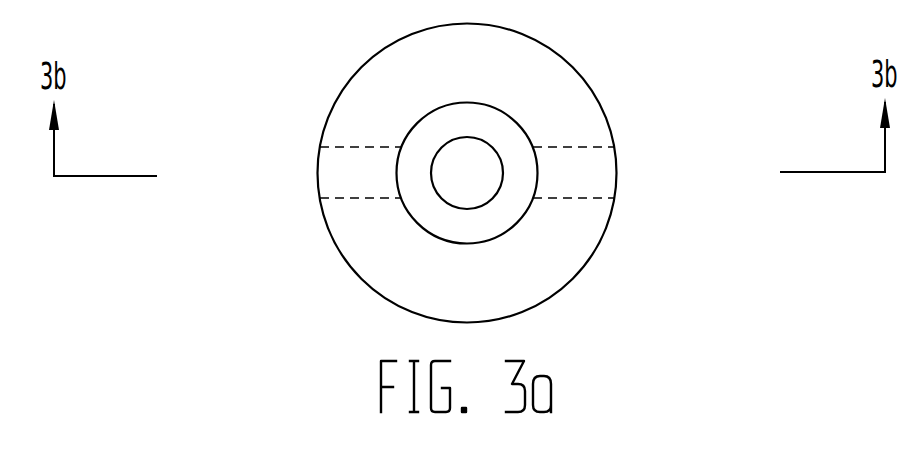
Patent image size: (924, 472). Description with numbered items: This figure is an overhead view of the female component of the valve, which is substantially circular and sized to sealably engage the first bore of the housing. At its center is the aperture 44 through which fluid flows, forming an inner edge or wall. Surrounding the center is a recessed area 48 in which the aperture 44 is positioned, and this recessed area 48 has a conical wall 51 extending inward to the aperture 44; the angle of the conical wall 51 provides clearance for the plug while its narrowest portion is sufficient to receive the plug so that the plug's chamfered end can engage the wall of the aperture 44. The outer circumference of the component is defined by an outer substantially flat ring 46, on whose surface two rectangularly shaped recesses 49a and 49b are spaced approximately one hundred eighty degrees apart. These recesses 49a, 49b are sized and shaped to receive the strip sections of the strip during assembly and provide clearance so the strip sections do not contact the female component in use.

The aperture 44 is at (454, 153).
The outer substantially flat ring 46 is at (561, 254).
The recessed area 48 is at (480, 122).
The rectangularly shaped recess 49a is at (328, 185).
The rectangularly shaped recess 49b is at (605, 158).
The conical wall 51 is at (425, 130).